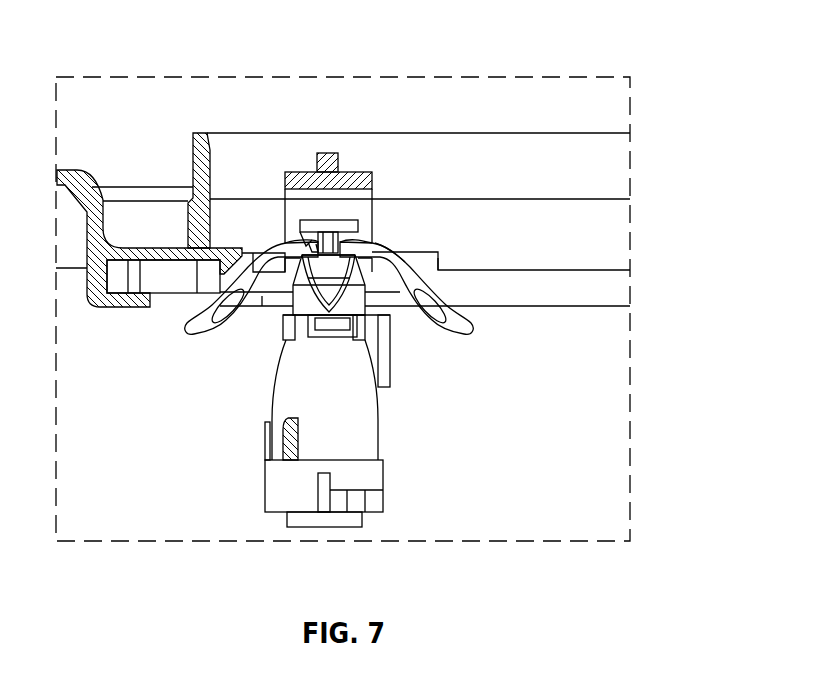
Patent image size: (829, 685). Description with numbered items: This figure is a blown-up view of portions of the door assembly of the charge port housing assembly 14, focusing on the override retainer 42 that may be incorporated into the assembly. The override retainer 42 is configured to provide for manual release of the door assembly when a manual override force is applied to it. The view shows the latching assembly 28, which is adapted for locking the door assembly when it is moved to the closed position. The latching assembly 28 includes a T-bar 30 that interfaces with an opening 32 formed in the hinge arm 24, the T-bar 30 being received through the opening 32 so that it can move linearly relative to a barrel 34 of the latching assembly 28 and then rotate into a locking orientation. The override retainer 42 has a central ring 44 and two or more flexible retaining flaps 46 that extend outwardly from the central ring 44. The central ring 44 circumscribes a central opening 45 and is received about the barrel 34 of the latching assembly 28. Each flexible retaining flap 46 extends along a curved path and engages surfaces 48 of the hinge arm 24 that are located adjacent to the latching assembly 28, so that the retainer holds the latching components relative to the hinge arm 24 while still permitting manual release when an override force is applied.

The charge port housing assembly 14 is at (598, 78).
The hinge arm 24 is at (473, 222).
The latching assembly 28 is at (395, 431).
The T-bar 30 is at (350, 229).
The opening 32 is at (336, 223).
The barrel 34 is at (303, 235).
The override retainer 42 is at (215, 341).
The central ring 44 is at (397, 255).
The central opening 45 is at (310, 245).
The flexible retaining flaps 46 is at (192, 326).
The surfaces 48 is at (440, 270).